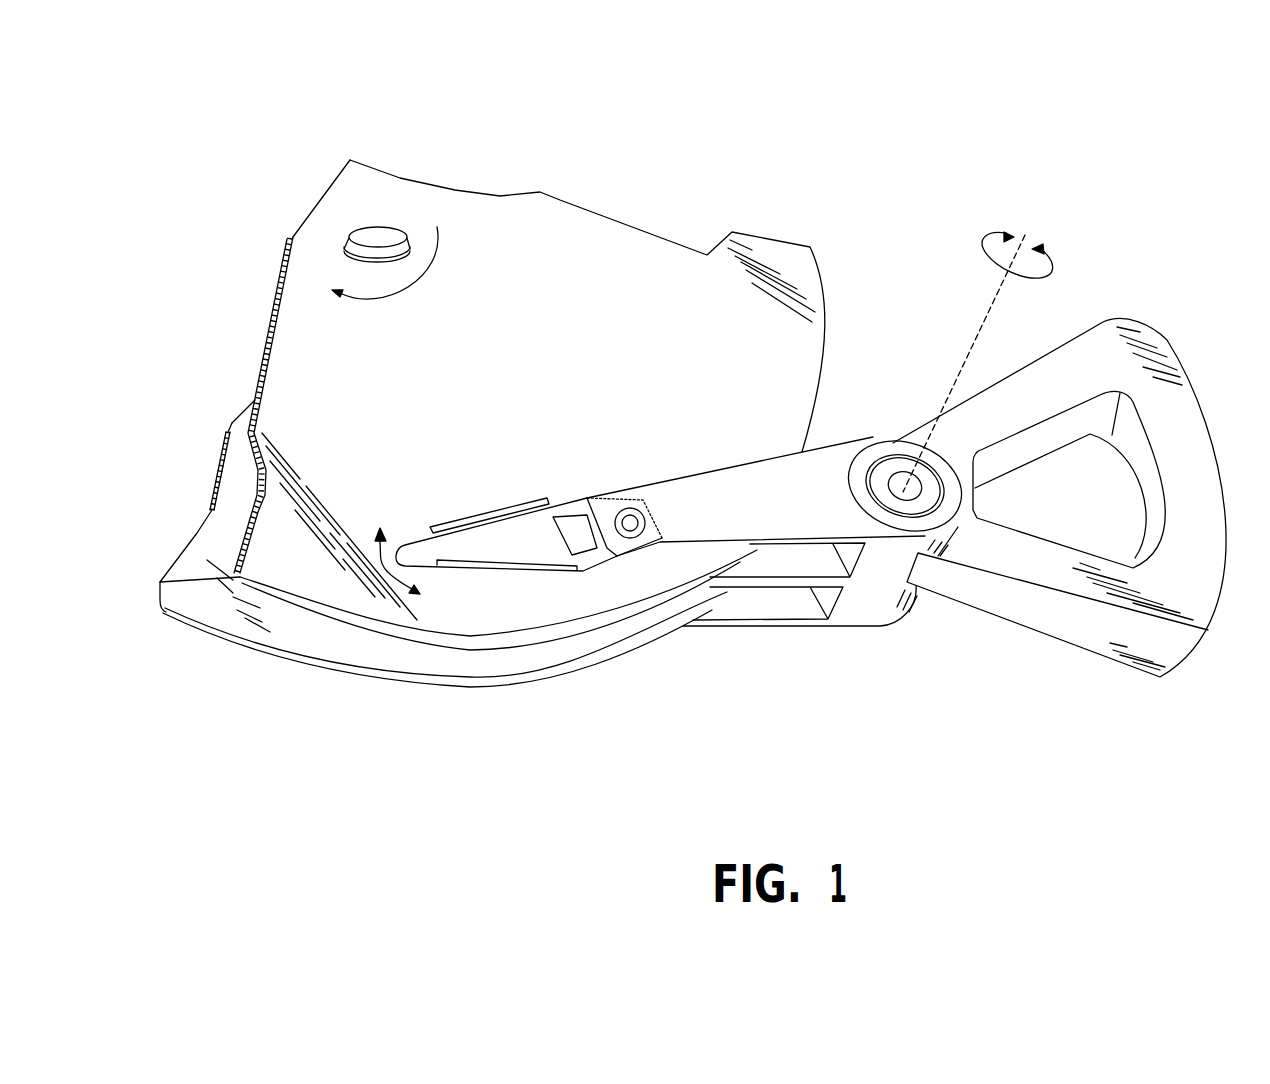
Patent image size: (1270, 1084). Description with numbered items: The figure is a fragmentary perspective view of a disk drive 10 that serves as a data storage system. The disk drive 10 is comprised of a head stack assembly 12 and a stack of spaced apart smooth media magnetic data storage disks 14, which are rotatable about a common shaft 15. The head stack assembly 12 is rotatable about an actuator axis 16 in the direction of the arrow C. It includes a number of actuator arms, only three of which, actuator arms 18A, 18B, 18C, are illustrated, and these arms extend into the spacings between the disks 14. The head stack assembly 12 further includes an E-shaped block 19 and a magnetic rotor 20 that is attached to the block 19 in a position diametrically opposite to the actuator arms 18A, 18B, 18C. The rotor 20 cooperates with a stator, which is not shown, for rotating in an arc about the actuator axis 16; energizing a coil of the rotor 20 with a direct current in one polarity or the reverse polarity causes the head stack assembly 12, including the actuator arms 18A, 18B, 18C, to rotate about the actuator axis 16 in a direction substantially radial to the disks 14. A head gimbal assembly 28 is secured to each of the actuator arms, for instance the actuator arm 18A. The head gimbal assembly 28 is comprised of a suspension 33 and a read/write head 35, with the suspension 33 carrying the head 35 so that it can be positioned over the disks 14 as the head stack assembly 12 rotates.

The disk drive 10 is at (675, 118).
The head stack assembly 12 is at (874, 662).
The smooth media magnetic data storage disks 14 is at (573, 294).
The common shaft 15 is at (360, 235).
The actuator axis 16 is at (993, 304).
The actuator arm 18A is at (762, 466).
The actuator arm 18B is at (757, 594).
The actuator arm 18C is at (788, 618).
The E-shaped block 19 is at (880, 608).
The magnetic rotor 20 is at (1050, 622).
The head gimbal assembly 28 is at (499, 490).
The suspension 33 is at (530, 555).
The read/write head 35 is at (393, 563).